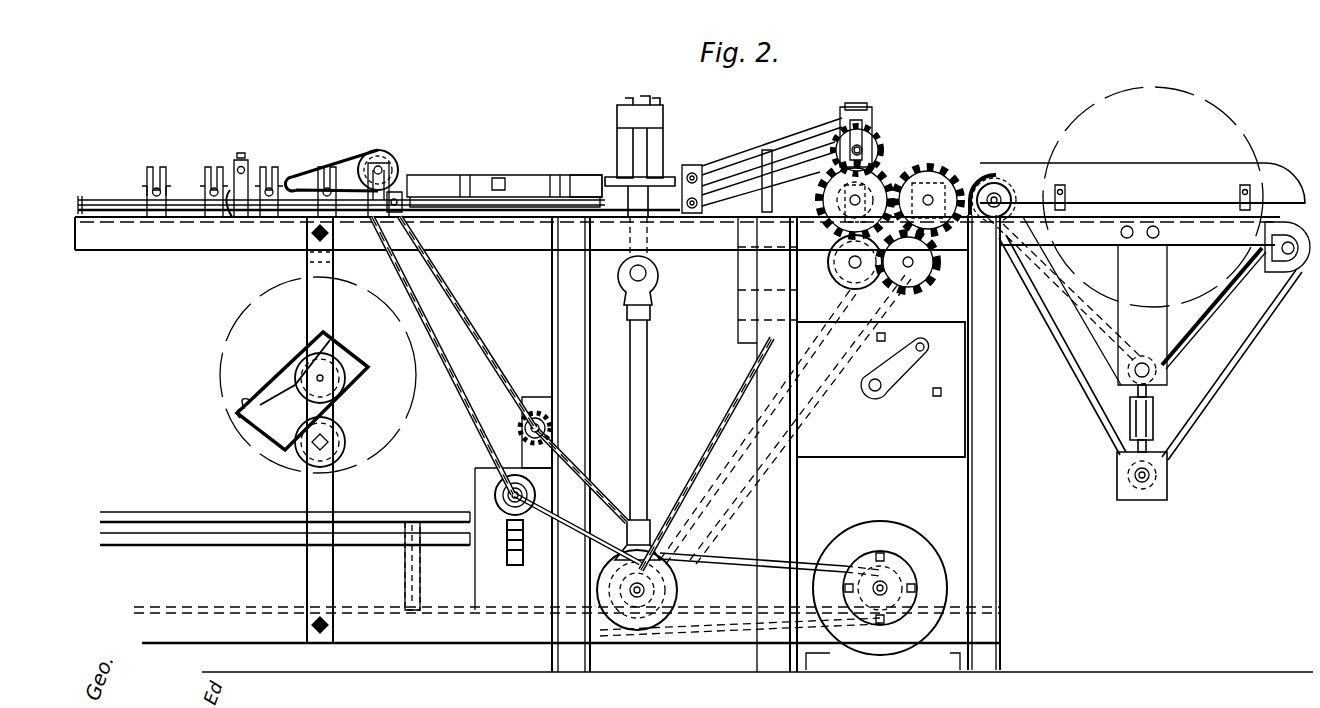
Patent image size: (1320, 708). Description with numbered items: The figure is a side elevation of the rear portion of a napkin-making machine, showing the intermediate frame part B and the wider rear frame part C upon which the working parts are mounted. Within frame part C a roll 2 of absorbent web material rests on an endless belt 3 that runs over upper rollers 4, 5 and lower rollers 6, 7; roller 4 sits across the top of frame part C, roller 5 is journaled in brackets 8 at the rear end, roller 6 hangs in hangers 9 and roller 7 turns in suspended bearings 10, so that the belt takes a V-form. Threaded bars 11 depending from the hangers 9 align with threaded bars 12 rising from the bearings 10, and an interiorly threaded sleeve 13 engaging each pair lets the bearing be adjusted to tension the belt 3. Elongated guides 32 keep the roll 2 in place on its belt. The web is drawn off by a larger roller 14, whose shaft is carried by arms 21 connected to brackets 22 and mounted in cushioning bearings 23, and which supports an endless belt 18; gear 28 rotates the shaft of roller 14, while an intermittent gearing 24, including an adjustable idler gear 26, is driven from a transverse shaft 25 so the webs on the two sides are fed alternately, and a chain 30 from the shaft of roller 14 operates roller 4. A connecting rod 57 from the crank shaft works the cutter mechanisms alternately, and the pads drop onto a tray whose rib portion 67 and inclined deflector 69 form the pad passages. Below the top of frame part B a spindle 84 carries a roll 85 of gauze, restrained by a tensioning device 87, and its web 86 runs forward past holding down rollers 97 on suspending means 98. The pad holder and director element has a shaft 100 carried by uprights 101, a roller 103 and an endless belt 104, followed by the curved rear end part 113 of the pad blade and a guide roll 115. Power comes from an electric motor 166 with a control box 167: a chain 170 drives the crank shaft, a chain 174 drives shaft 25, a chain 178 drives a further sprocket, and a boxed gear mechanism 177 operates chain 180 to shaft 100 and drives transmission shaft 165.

The intermediate frame part B is at (195, 246).
The rear frame part C is at (1010, 512).
The roll of absorbent material 2 is at (1212, 292).
The endless belt 3 is at (1062, 370).
The upper roller 4 is at (998, 176).
The upper roller 5 is at (1290, 285).
The lower roller 6 is at (1148, 360).
The lower roller 7 is at (1135, 476).
The brackets 8 is at (1282, 222).
The hangers 9 is at (1160, 272).
The suspended bearings 10 is at (1168, 488).
The threaded bars 11 is at (1150, 393).
The threaded bars 12 is at (1136, 446).
The interiorly threaded sleeve 13 is at (1154, 415).
The roller 14 is at (880, 185).
The endless belt 18 is at (790, 148).
The arms 21 is at (795, 150).
The brackets 22 is at (689, 164).
The cushioning bearings 23 is at (858, 135).
The intermittent gearing 24 is at (915, 290).
The shaft 25 is at (927, 168).
The idler gear 26 is at (672, 122).
The gear 28 is at (866, 150).
The chain 30 is at (972, 180).
The elongated guides 32 is at (1225, 168).
The connecting rod 57 is at (647, 342).
The inner end portion of rib 67 is at (459, 173).
The inclined deflector 69 is at (585, 174).
The spindle 84 is at (318, 378).
The roll of gauze 85 is at (238, 336).
The web of gauze 86 is at (415, 272).
The tensioning device 87 is at (285, 390).
The holding down rollers 97 is at (207, 178).
The suspending means 98 is at (150, 178).
The shaft 100 is at (396, 160).
The uprights 101 is at (400, 172).
The roller 103 is at (378, 150).
The endless belt 104 is at (340, 152).
The curved rear end part of blade 113 is at (229, 160).
The guide roll 115 is at (598, 535).
The transmission shaft 165 is at (215, 540).
The electric motor 166 is at (912, 540).
The control box 167 is at (885, 445).
The chain 170 is at (733, 552).
The chain 174 is at (735, 408).
The boxed gear mechanism 177 is at (495, 562).
The chain 178 is at (590, 470).
The chain 180 is at (470, 340).